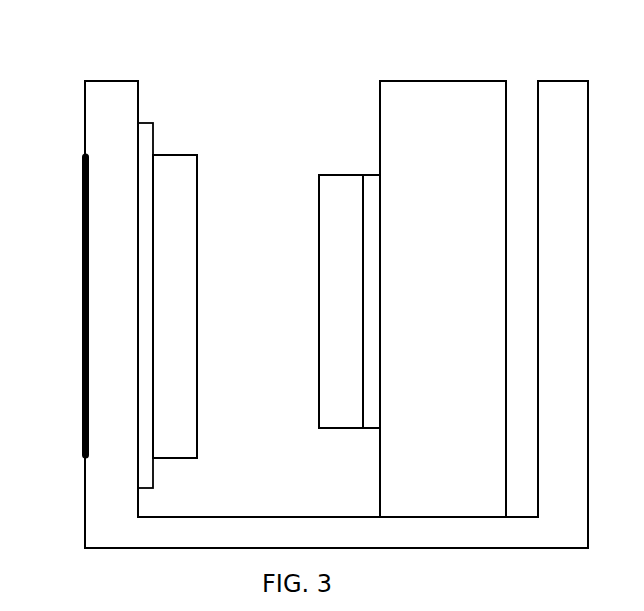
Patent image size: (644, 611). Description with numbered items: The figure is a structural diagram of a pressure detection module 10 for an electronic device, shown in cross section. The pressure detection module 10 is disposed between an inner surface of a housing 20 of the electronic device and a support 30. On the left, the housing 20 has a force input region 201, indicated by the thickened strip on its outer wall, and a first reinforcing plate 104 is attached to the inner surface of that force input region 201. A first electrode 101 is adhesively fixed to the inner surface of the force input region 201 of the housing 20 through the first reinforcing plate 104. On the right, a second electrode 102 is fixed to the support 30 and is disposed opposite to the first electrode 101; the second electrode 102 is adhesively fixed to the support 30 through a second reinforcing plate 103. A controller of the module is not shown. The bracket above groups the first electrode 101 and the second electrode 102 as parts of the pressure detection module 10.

The pressure detection module 10 is at (312, 103).
The housing 20 is at (118, 80).
The support 30 is at (425, 81).
The first electrode 101 is at (170, 155).
The second electrode 102 is at (338, 175).
The second reinforcing plate 103 is at (373, 205).
The first reinforcing plate 104 is at (143, 262).
The force input region 201 is at (83, 275).